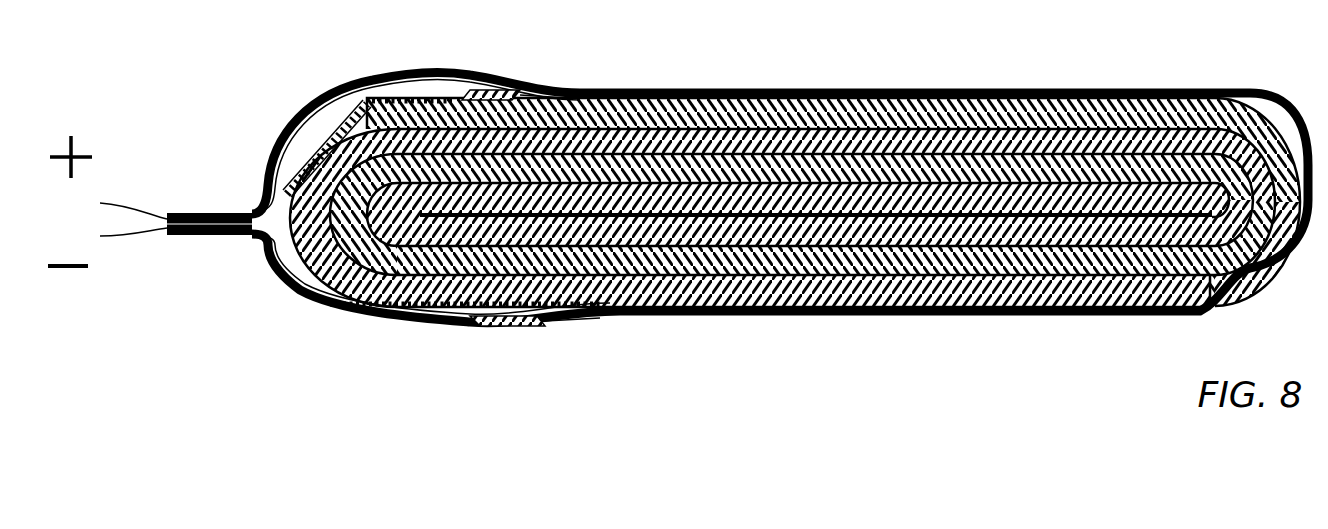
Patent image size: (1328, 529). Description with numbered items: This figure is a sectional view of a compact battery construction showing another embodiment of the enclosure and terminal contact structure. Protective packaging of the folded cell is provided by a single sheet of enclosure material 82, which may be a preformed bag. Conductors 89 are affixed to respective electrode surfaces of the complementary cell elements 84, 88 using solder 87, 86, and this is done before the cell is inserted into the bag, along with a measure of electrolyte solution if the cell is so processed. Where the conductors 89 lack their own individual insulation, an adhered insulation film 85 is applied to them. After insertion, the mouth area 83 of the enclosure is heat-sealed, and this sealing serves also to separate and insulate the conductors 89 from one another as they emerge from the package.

The enclosure material 82 is at (940, 91).
The mouth area 83 is at (203, 212).
The cell element 84 is at (904, 288).
The insulation film 85 is at (310, 122).
The solder 86 is at (494, 72).
The solder 87 is at (512, 326).
The cell element 88 is at (696, 92).
The conductors 89 is at (152, 237).